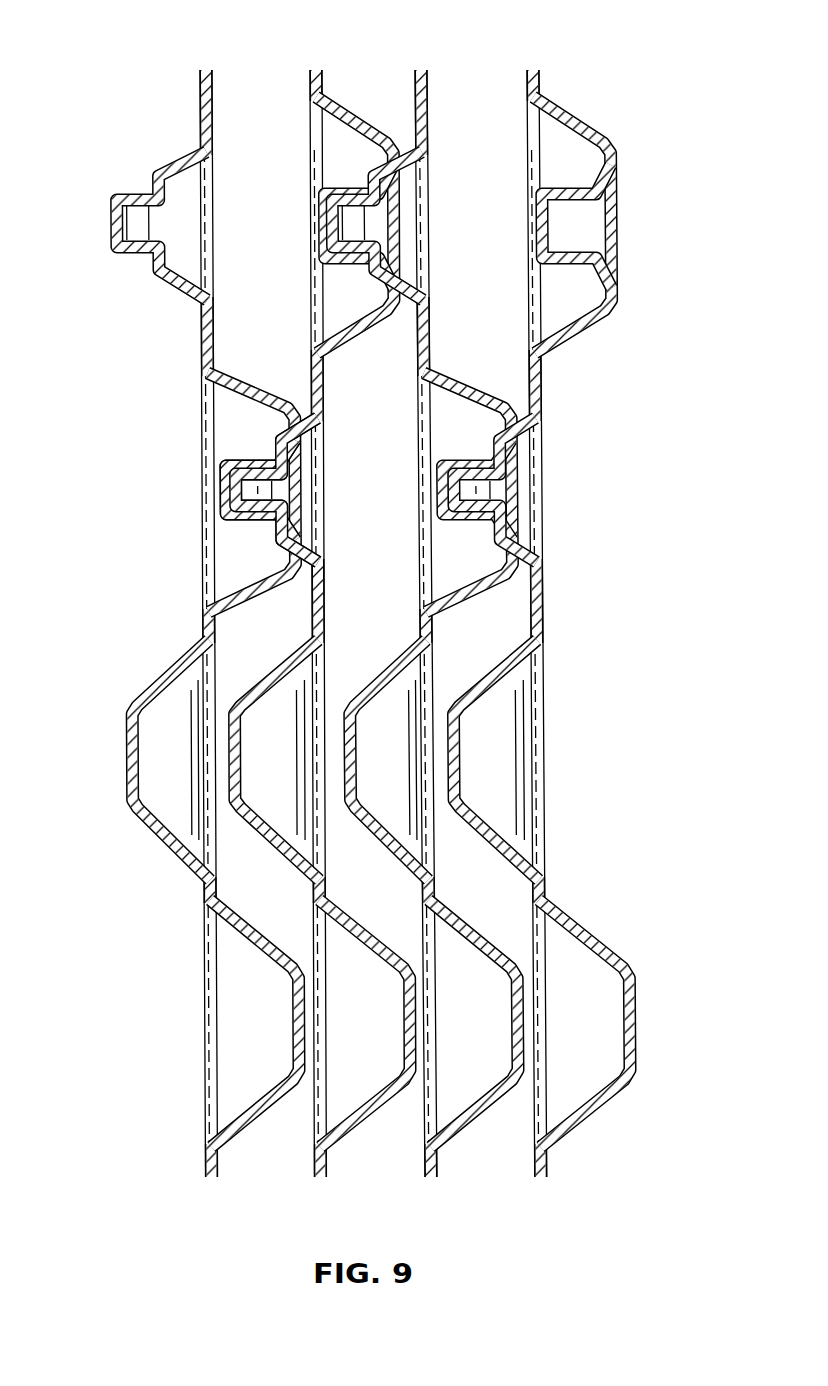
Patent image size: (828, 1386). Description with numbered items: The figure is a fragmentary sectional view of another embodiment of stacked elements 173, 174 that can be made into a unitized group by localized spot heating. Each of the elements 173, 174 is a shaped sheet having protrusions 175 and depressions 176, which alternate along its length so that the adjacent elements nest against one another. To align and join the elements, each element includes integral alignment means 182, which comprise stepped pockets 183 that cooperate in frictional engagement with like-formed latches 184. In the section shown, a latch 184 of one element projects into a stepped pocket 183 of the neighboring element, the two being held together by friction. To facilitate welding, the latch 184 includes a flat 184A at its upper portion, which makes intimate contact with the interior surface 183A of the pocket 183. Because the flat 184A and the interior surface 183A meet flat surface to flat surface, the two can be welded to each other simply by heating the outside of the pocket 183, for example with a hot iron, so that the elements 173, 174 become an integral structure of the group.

The element 173 is at (207, 68).
The element 174 is at (317, 68).
The protrusion 175 is at (168, 672).
The depression 176 is at (240, 930).
The integral alignment means 182 is at (190, 494).
The stepped pocket 183 is at (336, 190).
The interior surface of the pocket 183A is at (218, 504).
The latch 184 is at (121, 196).
The flat 184A is at (231, 490).